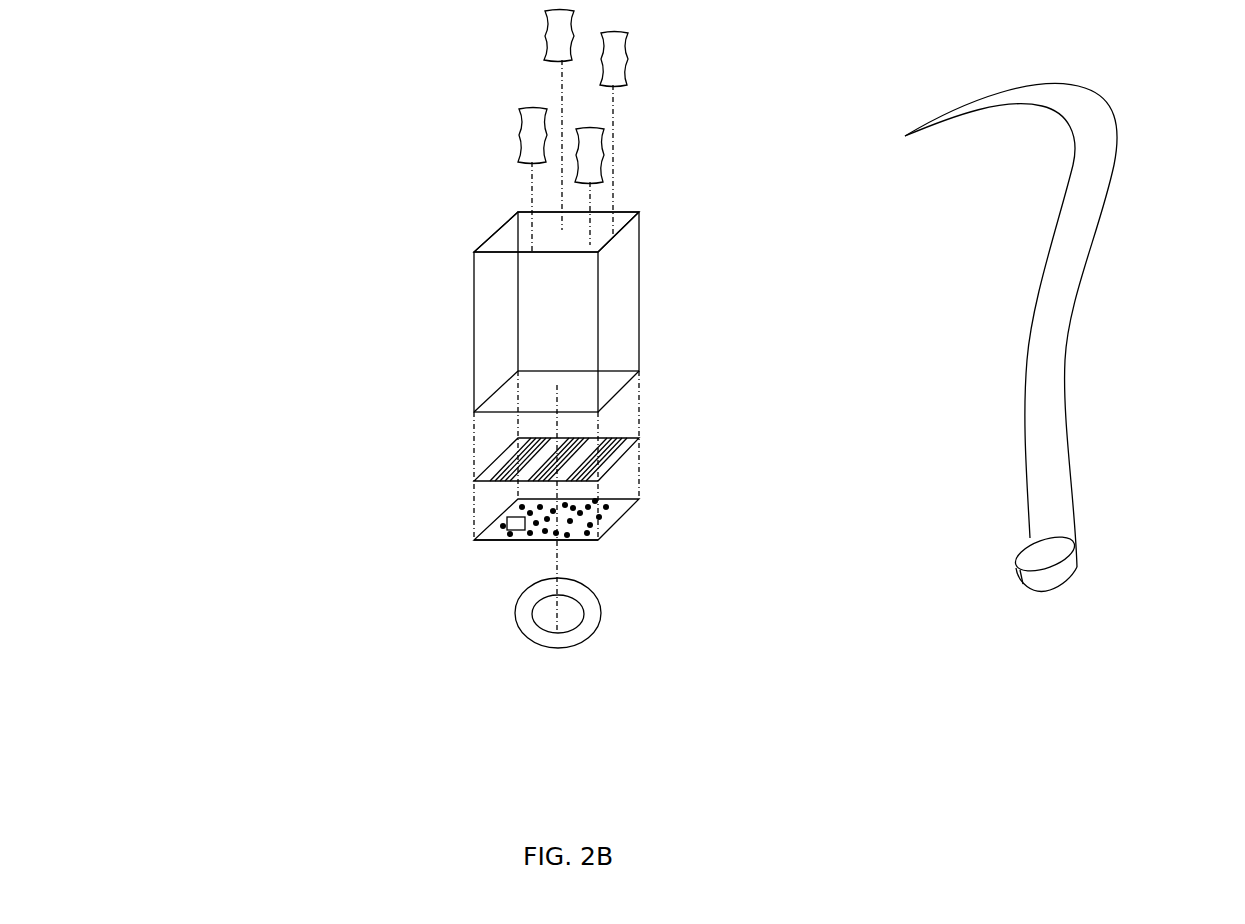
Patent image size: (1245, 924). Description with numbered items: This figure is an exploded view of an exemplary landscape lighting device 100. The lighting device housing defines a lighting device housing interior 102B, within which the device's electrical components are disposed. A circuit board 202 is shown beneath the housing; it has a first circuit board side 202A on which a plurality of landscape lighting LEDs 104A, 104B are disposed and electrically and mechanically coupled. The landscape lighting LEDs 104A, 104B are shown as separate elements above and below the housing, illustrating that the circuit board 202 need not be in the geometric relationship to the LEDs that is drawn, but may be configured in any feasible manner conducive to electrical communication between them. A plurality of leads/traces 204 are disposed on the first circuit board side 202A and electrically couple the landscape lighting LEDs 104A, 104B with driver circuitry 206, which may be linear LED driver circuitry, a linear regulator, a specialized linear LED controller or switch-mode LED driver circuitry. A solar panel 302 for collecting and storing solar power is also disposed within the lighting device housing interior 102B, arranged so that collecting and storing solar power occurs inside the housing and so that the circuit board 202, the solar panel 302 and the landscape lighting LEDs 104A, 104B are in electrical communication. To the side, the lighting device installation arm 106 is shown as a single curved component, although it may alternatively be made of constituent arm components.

The landscape lighting device 100 is at (107, 73).
The landscape lighting LEDs 104B is at (518, 130).
The lighting device housing interior 102B is at (500, 245).
The solar panel 302 is at (510, 473).
The first circuit board side 202A is at (626, 502).
The driver circuitry 206 is at (503, 521).
The leads/traces 204 is at (568, 542).
The circuit board 202 is at (474, 557).
The landscape lighting LEDs 104A is at (557, 653).
The lighting device installation arm 106 is at (1072, 367).